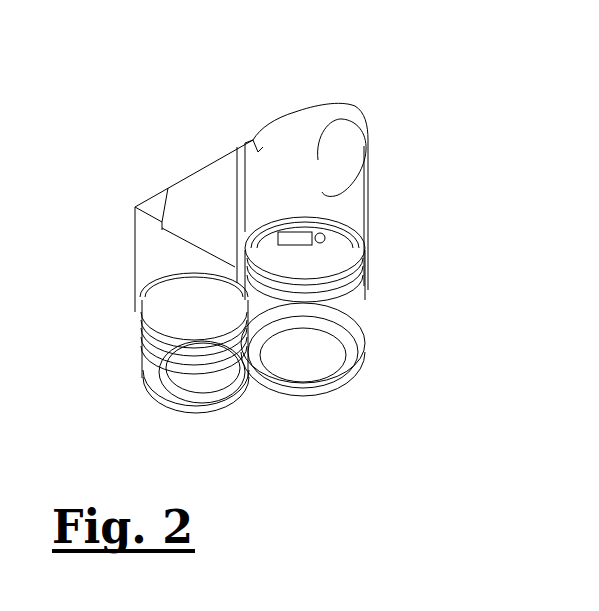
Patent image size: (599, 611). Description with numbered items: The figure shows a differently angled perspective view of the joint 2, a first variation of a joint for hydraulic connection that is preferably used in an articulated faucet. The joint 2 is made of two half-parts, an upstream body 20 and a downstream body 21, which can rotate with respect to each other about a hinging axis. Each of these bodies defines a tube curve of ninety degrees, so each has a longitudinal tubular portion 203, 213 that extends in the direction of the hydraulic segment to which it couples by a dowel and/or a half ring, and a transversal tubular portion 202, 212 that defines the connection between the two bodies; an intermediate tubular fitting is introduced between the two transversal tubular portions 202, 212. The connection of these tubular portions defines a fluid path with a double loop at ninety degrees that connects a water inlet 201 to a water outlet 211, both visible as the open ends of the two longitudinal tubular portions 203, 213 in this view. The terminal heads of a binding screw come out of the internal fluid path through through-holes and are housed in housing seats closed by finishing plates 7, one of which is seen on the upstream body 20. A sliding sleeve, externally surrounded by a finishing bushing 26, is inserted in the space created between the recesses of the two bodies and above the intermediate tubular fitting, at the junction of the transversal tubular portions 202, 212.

The joint 2 is at (104, 132).
The transversal tubular portion 202 is at (175, 210).
The downstream body 21 is at (166, 242).
The finishing bushing 26 is at (203, 197).
The transversal tubular portion 212 is at (263, 147).
The finishing plate 7 is at (348, 156).
The upstream body 20 is at (347, 210).
The longitudinal tubular portion 203 is at (187, 262).
The water inlet 201 is at (188, 363).
The longitudinal tubular portion 213 is at (290, 208).
The water outlet 211 is at (307, 360).